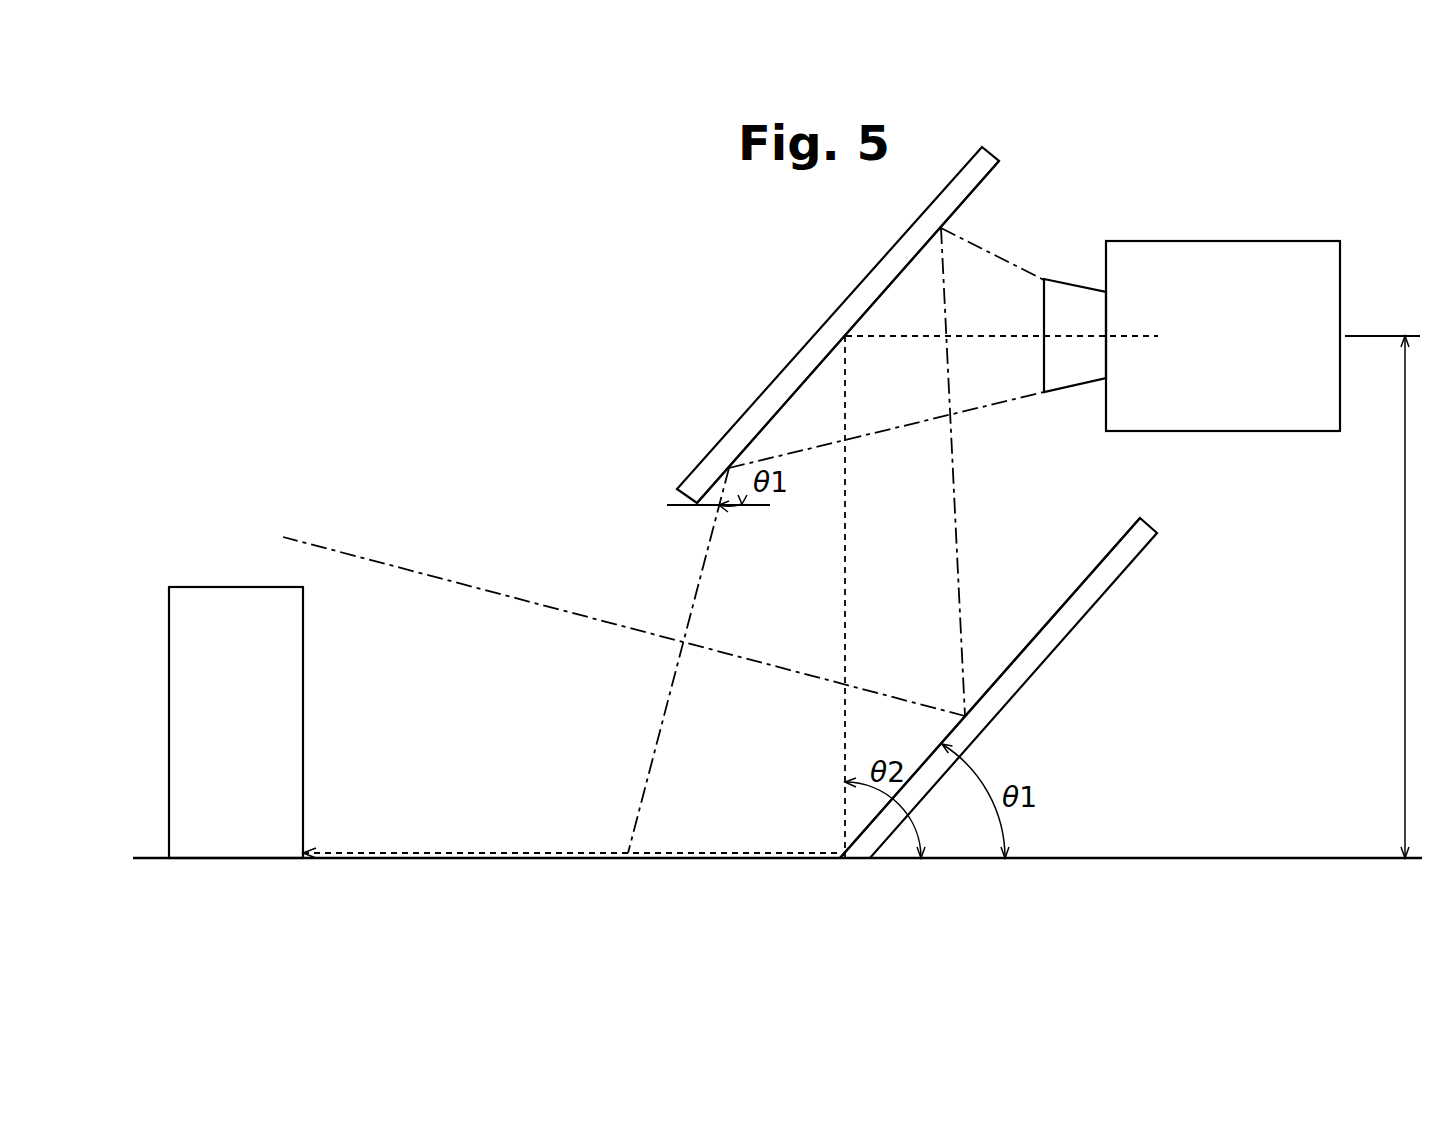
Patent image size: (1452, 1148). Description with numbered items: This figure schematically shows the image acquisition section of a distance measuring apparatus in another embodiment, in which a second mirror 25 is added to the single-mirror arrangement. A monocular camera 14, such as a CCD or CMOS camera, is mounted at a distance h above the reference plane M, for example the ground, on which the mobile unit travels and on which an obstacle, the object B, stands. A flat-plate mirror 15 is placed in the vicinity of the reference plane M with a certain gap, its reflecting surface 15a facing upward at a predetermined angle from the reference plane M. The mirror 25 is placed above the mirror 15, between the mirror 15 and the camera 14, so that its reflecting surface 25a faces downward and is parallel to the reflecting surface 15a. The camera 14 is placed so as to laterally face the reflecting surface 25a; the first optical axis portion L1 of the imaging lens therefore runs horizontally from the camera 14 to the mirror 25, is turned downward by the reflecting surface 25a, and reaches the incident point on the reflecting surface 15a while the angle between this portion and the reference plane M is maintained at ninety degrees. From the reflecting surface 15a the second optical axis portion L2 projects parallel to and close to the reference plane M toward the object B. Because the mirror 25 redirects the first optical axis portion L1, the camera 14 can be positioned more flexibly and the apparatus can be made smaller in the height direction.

The monocular camera 14 is at (1341, 300).
The mirror 15 is at (1133, 562).
The reflecting surface 15a is at (1068, 596).
The mirror 25 is at (989, 152).
The reflecting surface 25a is at (984, 181).
The object B is at (303, 688).
The reference plane M is at (1113, 857).
The first optical axis portion L1 is at (843, 562).
The second optical axis portion L2 is at (497, 852).
The distance from the reference plane to the camera h is at (1393, 597).